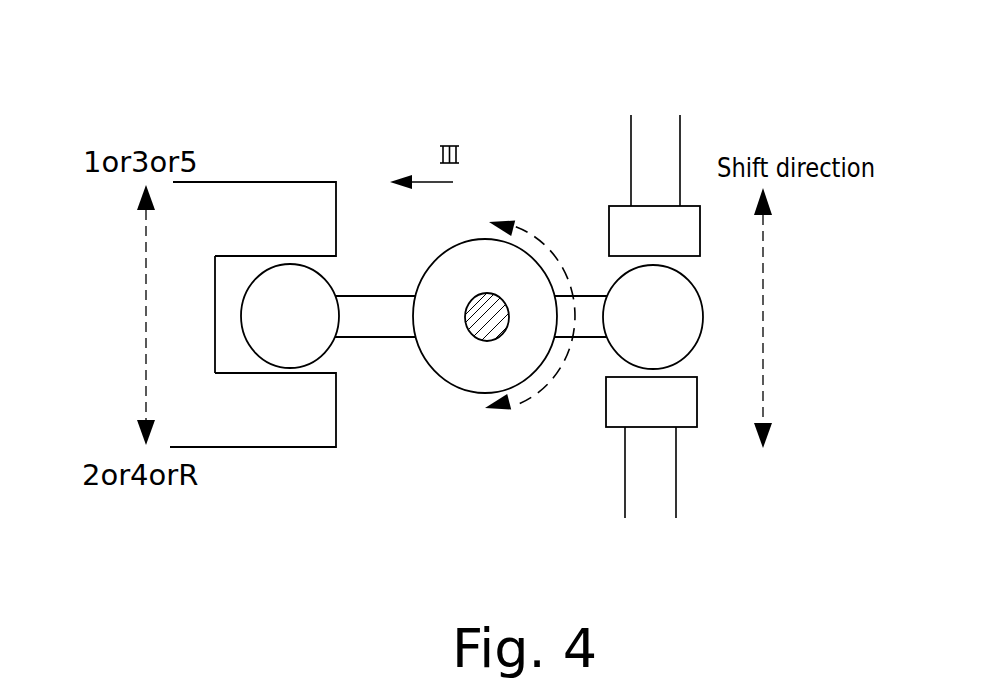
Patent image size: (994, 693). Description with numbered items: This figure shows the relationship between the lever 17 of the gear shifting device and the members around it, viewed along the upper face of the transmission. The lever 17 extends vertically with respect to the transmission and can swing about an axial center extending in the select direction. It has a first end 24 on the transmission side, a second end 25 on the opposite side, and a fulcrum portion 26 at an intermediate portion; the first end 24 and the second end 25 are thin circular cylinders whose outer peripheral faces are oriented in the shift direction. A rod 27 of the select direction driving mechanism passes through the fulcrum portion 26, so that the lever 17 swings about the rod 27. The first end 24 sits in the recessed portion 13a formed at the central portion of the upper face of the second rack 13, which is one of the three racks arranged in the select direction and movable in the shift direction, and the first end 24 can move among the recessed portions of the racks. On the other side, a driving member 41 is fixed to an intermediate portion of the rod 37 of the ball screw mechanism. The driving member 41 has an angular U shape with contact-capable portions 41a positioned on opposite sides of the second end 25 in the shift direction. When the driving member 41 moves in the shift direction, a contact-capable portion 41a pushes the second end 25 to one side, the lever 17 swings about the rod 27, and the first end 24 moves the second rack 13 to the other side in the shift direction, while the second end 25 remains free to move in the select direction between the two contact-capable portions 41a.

The second rack 13 is at (324, 158).
The recessed portion 13a is at (215, 330).
The lever 17 is at (536, 203).
The first end 24 is at (313, 347).
The second end 25 is at (668, 328).
The fulcrum portion 26 is at (502, 358).
The rod 27 is at (478, 305).
The rod 37 is at (667, 147).
The driving member 41 is at (733, 317).
The contact-capable portions 41a is at (663, 217).